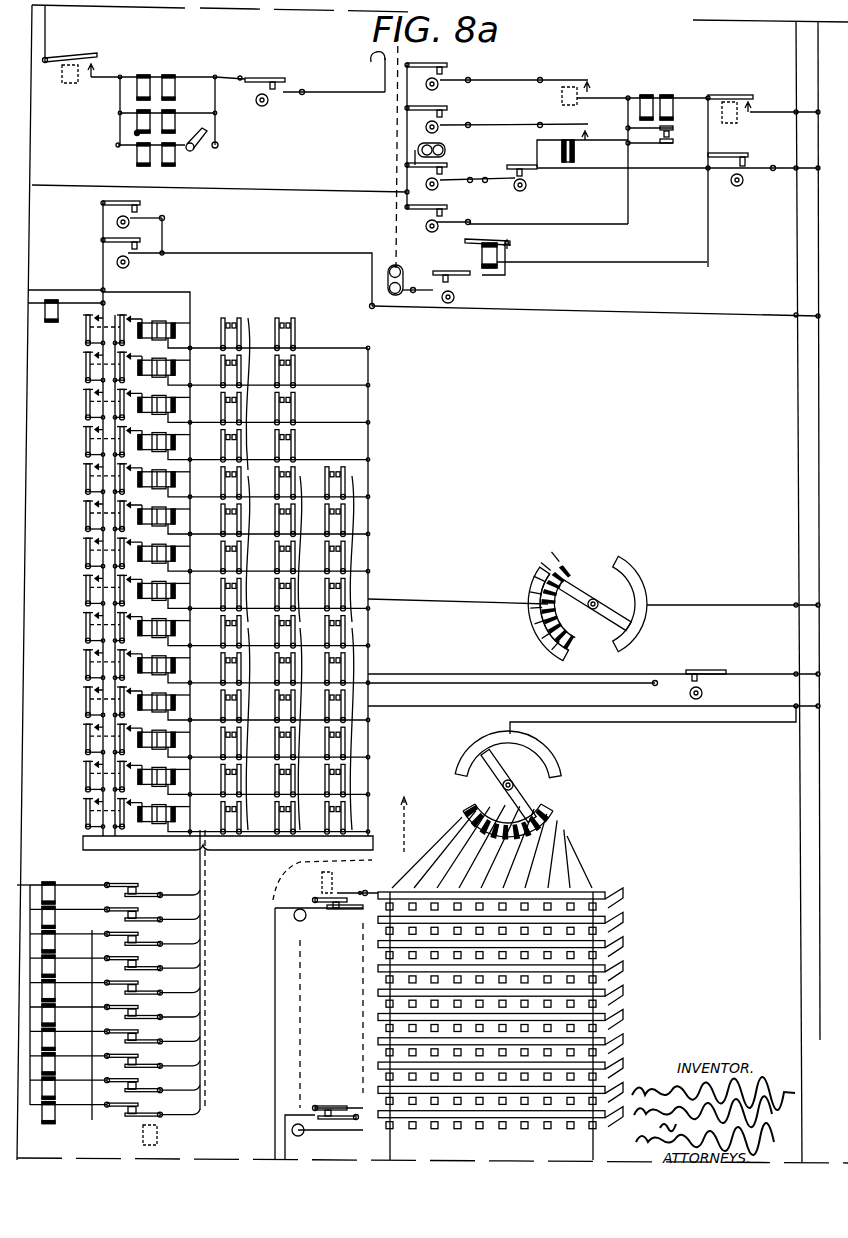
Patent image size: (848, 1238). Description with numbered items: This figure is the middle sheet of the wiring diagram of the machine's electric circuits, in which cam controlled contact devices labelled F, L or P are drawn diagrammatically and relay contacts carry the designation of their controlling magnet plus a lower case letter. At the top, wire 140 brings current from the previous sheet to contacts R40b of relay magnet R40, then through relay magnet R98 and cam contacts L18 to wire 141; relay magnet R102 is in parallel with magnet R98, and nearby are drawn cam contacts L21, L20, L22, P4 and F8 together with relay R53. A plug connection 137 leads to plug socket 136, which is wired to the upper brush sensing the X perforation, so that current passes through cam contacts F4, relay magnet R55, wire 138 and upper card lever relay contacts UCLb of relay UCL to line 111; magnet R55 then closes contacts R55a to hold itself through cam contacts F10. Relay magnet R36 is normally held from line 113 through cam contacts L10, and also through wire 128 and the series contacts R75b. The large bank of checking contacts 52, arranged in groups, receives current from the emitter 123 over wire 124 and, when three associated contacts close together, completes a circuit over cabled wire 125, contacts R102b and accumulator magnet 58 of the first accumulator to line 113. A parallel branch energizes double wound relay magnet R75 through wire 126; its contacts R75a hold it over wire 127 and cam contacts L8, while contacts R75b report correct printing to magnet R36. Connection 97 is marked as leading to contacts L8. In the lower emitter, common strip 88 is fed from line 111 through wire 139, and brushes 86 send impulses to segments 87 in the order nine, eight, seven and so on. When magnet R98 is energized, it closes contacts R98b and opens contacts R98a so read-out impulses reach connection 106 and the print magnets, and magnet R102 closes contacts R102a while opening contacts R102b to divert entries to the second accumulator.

The wire 140 is at (45, 58).
The contacts R40b is at (95, 62).
The relay magnet R40 is at (80, 80).
The relay magnet R98 is at (170, 85).
The relay magnet R102 is at (140, 118).
The cam contacts L18 is at (283, 90).
The wire 141 is at (333, 92).
The plug connection 137 is at (395, 163).
The contact L21 is at (452, 76).
The contact L20 is at (452, 119).
The contact L22 is at (452, 176).
The relay R53 is at (578, 103).
The upper card lever relay contacts UCLb is at (770, 92).
The upper card lever relay UCL is at (740, 122).
The contact F8 is at (750, 156).
The line 111 is at (796, 200).
The wire 138 is at (708, 230).
The wire 139 is at (673, 730).
The cam contacts F10 is at (450, 210).
The contacts R55a is at (512, 242).
The relay magnet R55 is at (482, 257).
The plug socket 136 is at (410, 278).
The cam contacts F4 is at (462, 288).
The contact P4 is at (133, 253).
The cam contacts L10 is at (146, 245).
The wire 126 is at (152, 300).
The relay magnet R36 is at (58, 322).
The line 113 is at (22, 572).
The wire 124 is at (366, 500).
The emitter 123 is at (615, 580).
The cam contacts L8 is at (703, 680).
The wire 128 is at (533, 704).
The common strip 88 is at (558, 772).
The emitter brushes 86 is at (548, 796).
The segments 87 is at (503, 825).
The conductor to L8 97 is at (405, 826).
The contacts 52 is at (268, 812).
The contacts R75b is at (86, 806).
The contacts R75a is at (118, 828).
The double wound relay magnet R75 is at (138, 832).
The wire 125 is at (196, 838).
The wire 127 is at (253, 843).
The contacts R98b is at (326, 897).
The contacts R98a is at (330, 912).
The connection 106 is at (270, 1012).
The contacts R102b is at (138, 905).
The contacts R102a is at (150, 927).
The accumulator magnet 58 is at (42, 1108).